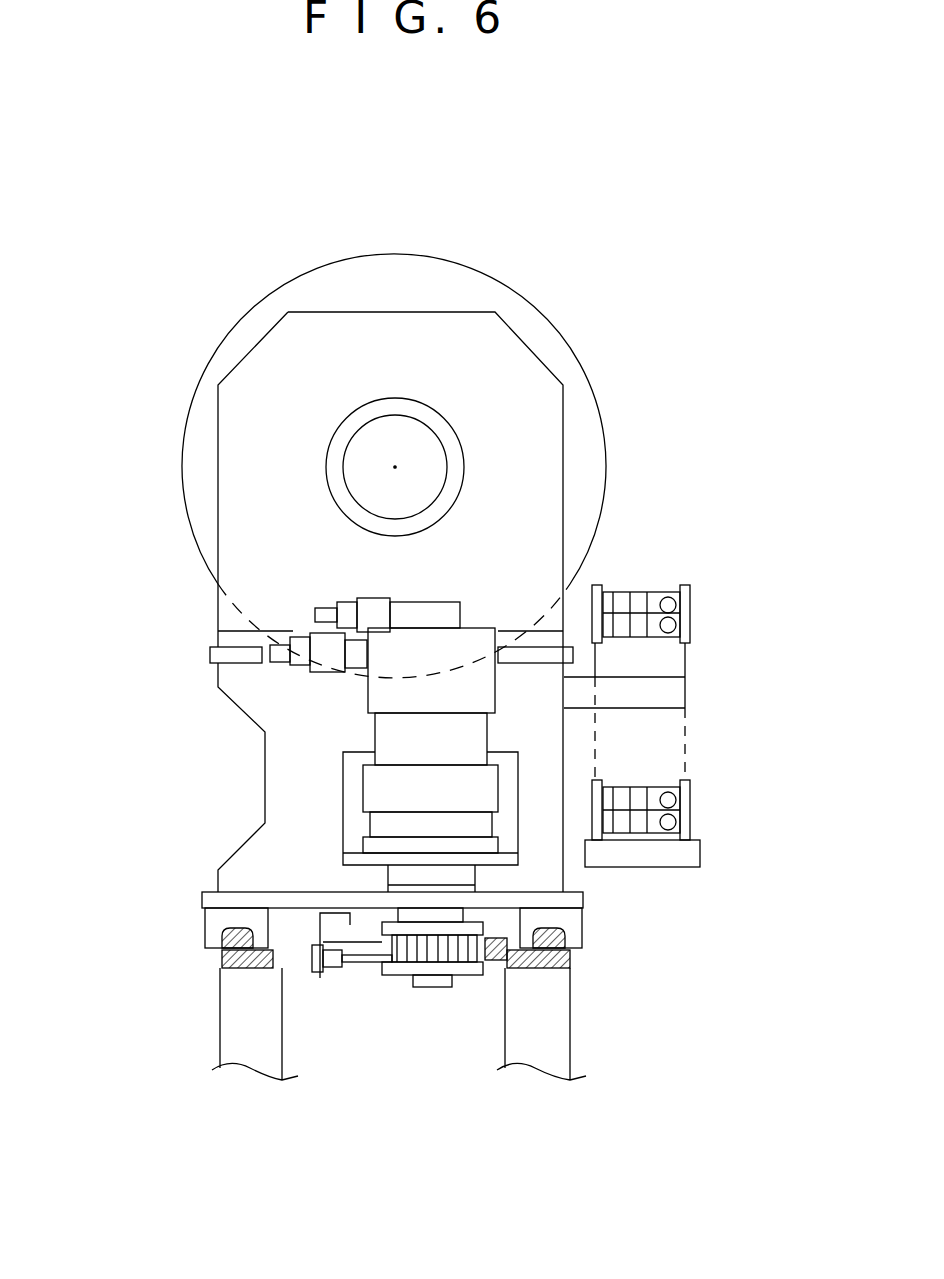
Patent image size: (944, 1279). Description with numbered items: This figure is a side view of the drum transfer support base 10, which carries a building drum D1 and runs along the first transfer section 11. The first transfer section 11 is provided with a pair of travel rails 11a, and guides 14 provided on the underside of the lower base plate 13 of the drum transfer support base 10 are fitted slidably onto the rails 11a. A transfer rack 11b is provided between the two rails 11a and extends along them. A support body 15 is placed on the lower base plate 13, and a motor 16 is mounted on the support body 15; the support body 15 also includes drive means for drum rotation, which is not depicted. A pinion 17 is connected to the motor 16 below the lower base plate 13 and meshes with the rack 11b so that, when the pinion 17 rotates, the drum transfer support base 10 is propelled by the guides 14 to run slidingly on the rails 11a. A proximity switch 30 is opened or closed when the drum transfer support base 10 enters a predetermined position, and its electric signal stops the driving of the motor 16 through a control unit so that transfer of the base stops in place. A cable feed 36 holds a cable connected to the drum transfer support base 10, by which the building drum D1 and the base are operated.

The drum transfer support base 10 is at (185, 335).
The building drum D1 is at (460, 280).
The cable feed 36 is at (647, 593).
The support body 15 is at (533, 735).
The motor 16 is at (410, 788).
The lower base plate 13 is at (585, 895).
The guide 14 is at (213, 927).
The travel rail 11a is at (220, 958).
The first transfer section 11 is at (208, 1048).
The proximity switch 30 is at (362, 970).
The pinion 17 is at (432, 953).
The transfer rack 11b is at (497, 960).